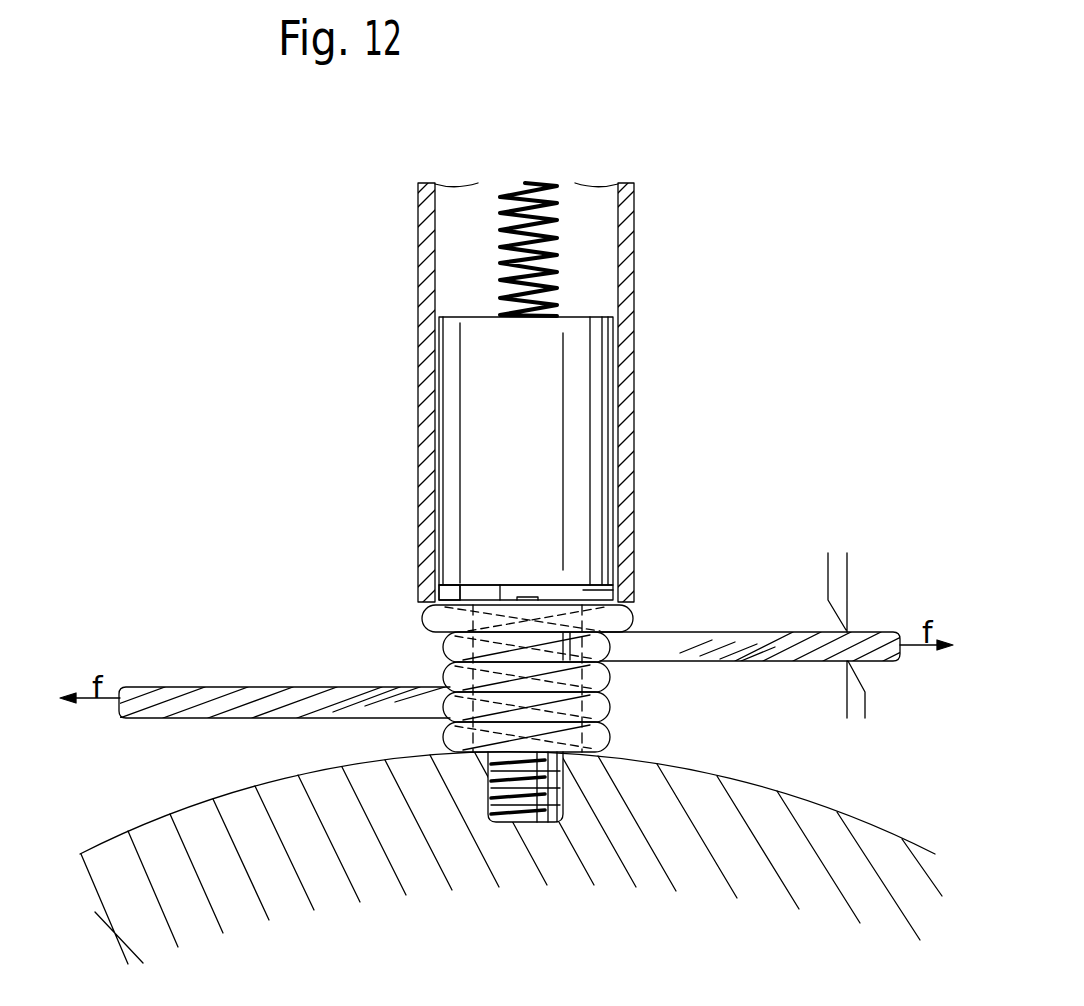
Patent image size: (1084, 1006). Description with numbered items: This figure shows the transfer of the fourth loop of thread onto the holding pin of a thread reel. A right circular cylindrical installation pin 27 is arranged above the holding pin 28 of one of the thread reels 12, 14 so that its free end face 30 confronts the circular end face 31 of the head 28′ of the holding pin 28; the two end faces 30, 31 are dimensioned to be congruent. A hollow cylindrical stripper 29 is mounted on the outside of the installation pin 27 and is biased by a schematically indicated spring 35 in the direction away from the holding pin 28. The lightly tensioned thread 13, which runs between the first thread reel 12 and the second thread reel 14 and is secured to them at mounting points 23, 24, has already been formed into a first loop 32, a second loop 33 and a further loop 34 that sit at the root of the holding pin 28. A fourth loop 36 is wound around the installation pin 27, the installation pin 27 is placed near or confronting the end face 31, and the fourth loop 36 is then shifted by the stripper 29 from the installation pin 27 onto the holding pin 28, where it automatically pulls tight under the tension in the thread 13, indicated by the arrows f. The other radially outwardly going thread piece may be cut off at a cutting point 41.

The first thread reel 12 is at (511, 865).
The second thread reel 14 is at (707, 835).
The thread 13 is at (172, 700).
The mounting point 23 is at (485, 458).
The mounting point 24 is at (368, 581).
The installation pin 27 is at (587, 390).
The holding pin 28 is at (468, 712).
The head of the holding pin 28′ is at (500, 585).
The stripper 29 is at (633, 238).
The free end face 30 is at (605, 590).
The end face 31 is at (460, 587).
The loop 32 is at (625, 736).
The second loop 33 is at (625, 705).
The further loop 34 is at (432, 648).
The spring 35 is at (525, 182).
The fourth loop 36 is at (412, 620).
The cutting point 41 is at (850, 647).